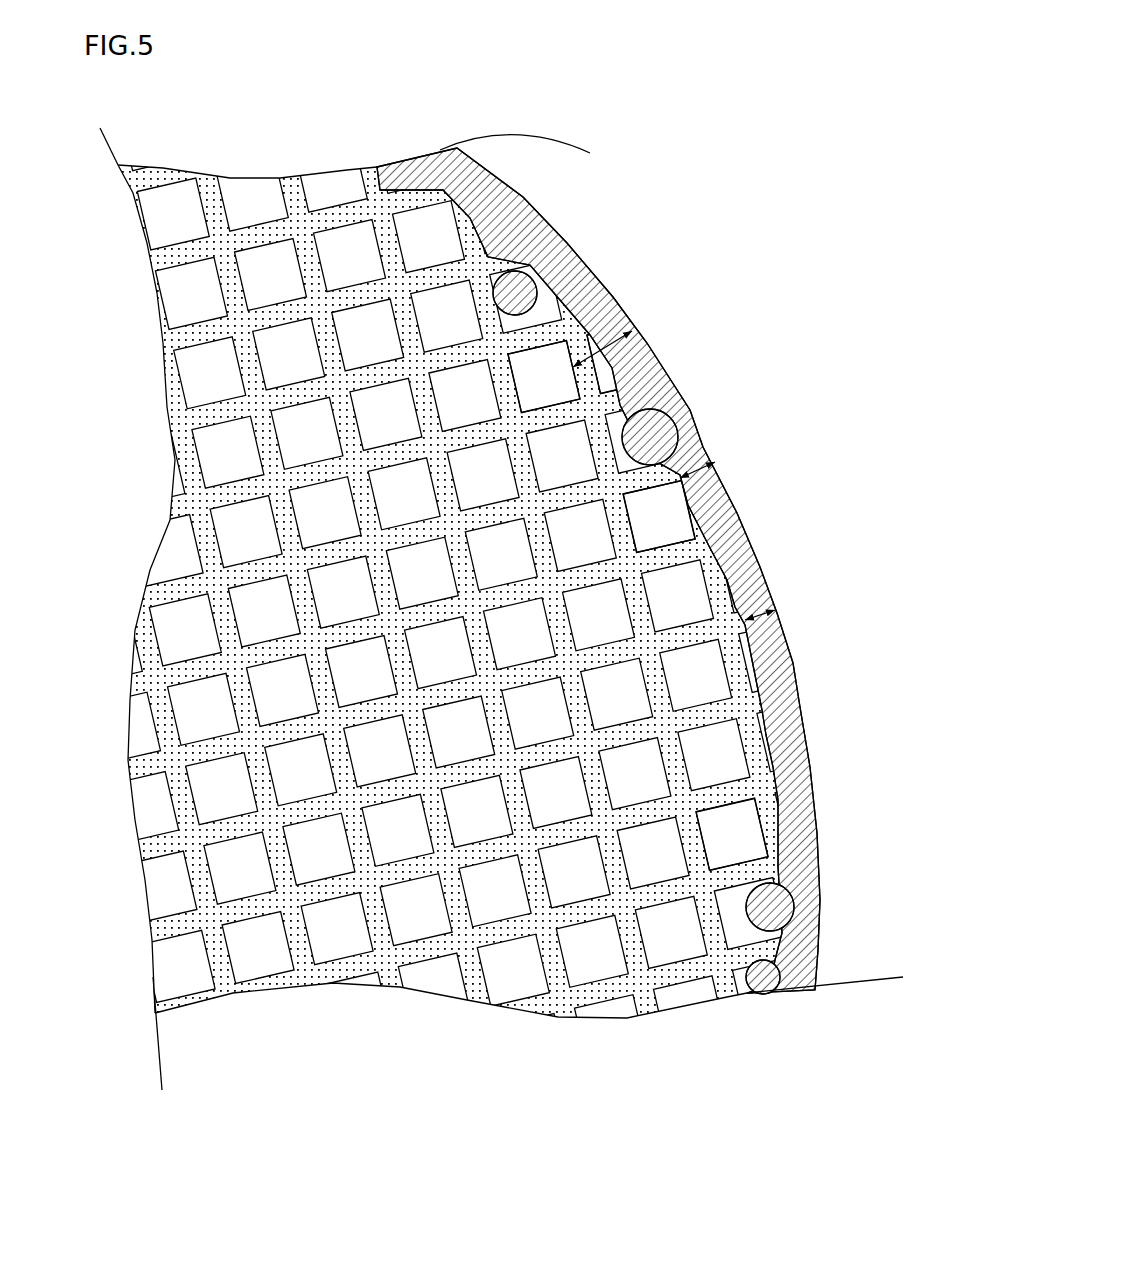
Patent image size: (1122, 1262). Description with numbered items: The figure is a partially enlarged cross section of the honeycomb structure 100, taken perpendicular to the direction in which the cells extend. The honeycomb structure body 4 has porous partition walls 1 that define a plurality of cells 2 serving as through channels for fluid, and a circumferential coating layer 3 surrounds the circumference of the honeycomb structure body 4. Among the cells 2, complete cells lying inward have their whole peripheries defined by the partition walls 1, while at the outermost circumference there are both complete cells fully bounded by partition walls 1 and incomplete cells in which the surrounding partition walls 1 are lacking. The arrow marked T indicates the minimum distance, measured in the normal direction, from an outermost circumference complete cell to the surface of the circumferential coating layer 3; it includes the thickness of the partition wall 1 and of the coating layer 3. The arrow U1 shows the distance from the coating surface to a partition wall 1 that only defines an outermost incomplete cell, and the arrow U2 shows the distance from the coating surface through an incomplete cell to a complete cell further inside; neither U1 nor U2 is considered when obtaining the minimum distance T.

The honeycomb structure 100 is at (836, 74).
The porous partition wall 1 is at (490, 357).
The cell 2 is at (543, 383).
The circumferential coating layer 3 is at (790, 690).
The honeycomb structure body 4 is at (833, 897).
The distance U1 is at (760, 615).
The distance U2 is at (640, 325).
The minimum distance T is at (697, 470).